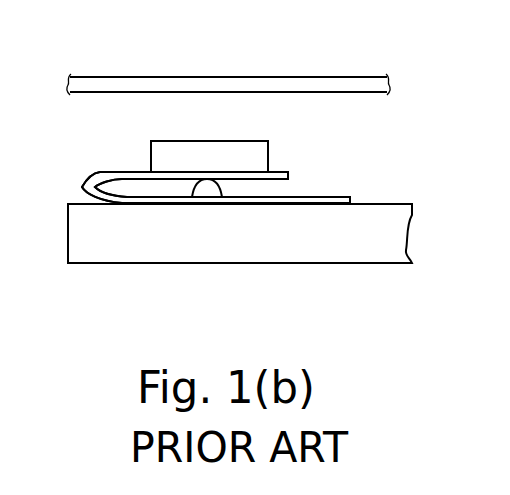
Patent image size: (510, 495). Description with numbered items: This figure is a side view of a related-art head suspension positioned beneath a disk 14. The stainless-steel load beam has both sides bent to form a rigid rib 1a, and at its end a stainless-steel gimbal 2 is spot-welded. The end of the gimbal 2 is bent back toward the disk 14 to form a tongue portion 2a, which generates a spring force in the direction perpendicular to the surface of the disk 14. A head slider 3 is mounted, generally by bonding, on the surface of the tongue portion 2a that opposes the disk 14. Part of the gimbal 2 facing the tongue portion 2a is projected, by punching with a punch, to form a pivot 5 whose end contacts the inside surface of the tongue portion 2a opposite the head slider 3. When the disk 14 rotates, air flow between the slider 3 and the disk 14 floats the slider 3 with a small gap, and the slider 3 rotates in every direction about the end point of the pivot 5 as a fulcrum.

The disk 14 is at (340, 83).
The rigid rib 1a is at (383, 252).
The gimbal 2 is at (320, 197).
The tongue portion 2a is at (108, 175).
The head slider 3 is at (252, 150).
The pivot 5 is at (207, 190).